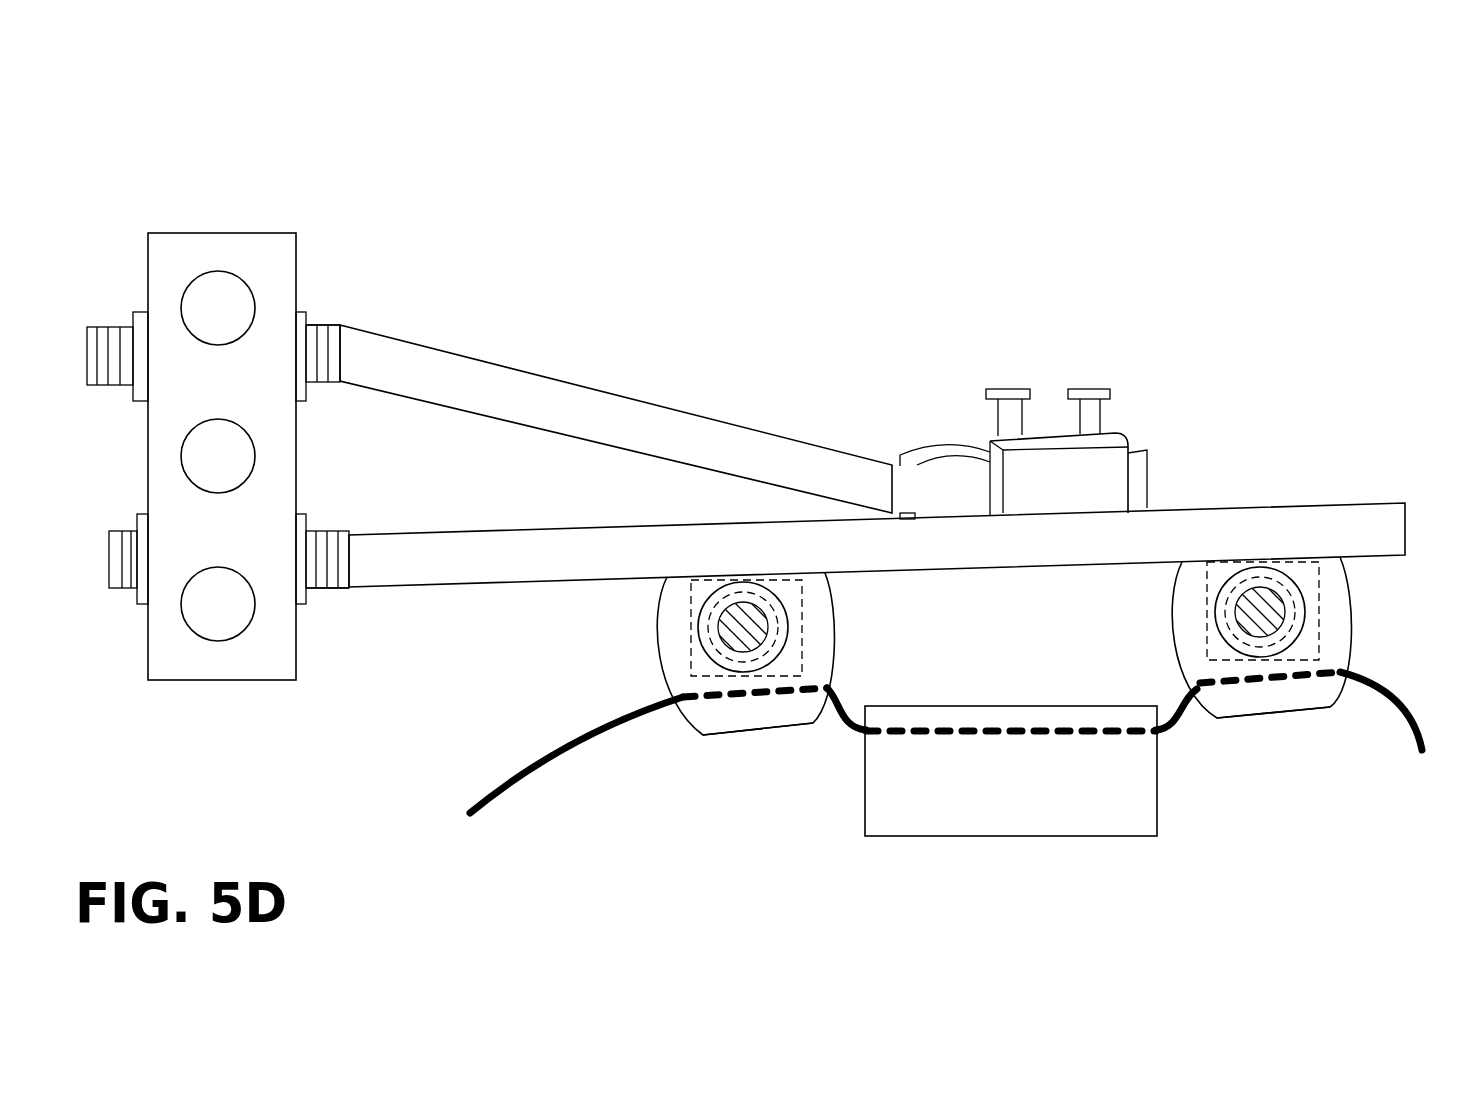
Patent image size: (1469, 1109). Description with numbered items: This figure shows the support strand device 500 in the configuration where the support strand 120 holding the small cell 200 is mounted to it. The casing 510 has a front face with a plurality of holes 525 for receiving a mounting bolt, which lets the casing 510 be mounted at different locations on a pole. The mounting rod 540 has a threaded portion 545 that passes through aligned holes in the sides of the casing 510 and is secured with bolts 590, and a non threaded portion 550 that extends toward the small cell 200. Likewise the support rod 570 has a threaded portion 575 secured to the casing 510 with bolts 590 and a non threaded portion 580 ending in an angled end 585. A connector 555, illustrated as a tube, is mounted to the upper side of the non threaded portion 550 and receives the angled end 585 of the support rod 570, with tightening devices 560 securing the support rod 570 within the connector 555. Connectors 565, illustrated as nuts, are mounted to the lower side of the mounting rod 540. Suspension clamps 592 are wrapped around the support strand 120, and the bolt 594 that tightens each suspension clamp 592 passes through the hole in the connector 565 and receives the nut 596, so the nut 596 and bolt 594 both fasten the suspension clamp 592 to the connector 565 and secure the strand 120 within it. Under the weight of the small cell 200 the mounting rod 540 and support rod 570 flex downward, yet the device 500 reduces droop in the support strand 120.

The support strand device 500 is at (1232, 178).
The casing 510 is at (225, 200).
The holes 525 is at (218, 325).
The bolts 590 is at (142, 311).
The threaded portion 575 is at (313, 321).
The threaded portion 545 is at (337, 590).
The mounting rod 540 is at (433, 648).
The support rod 570 is at (540, 280).
The non threaded portion 580 is at (663, 405).
The non threaded portion 550 is at (490, 588).
The connector 555 is at (1045, 467).
The angled end 585 is at (923, 485).
The tightening devices 560 is at (1006, 389).
The connectors 565 is at (1025, 644).
The bolt 594 is at (750, 612).
The nut 596 is at (790, 650).
The suspension clamps 592 is at (752, 736).
The support strand 120 is at (502, 801).
The small cell 200 is at (1013, 837).